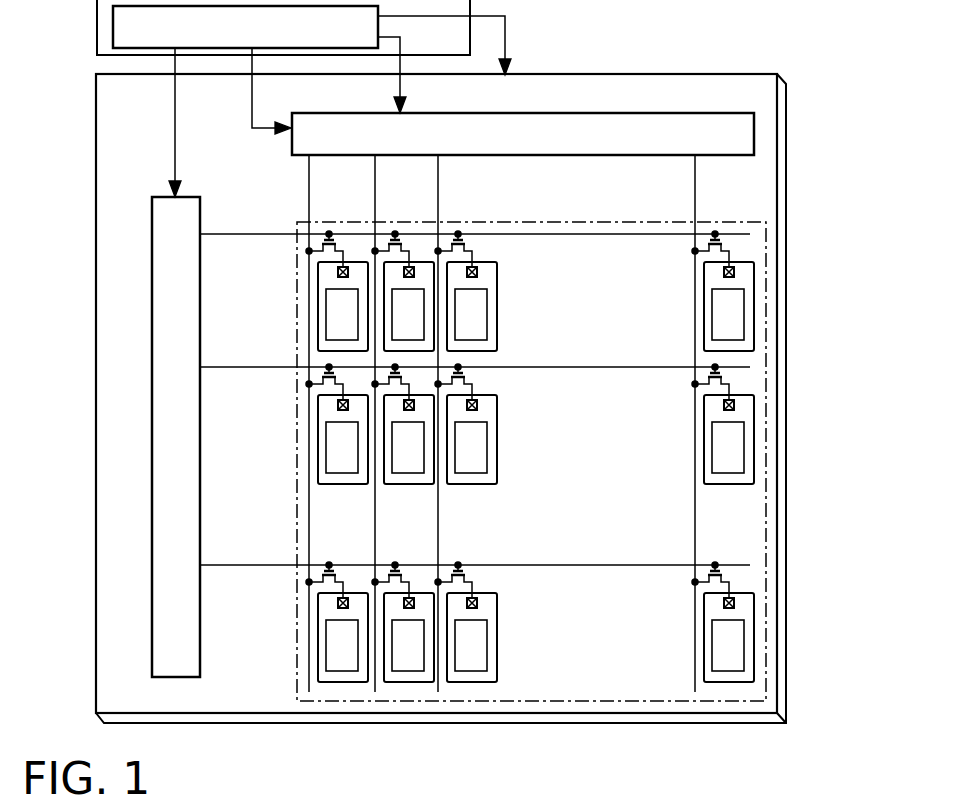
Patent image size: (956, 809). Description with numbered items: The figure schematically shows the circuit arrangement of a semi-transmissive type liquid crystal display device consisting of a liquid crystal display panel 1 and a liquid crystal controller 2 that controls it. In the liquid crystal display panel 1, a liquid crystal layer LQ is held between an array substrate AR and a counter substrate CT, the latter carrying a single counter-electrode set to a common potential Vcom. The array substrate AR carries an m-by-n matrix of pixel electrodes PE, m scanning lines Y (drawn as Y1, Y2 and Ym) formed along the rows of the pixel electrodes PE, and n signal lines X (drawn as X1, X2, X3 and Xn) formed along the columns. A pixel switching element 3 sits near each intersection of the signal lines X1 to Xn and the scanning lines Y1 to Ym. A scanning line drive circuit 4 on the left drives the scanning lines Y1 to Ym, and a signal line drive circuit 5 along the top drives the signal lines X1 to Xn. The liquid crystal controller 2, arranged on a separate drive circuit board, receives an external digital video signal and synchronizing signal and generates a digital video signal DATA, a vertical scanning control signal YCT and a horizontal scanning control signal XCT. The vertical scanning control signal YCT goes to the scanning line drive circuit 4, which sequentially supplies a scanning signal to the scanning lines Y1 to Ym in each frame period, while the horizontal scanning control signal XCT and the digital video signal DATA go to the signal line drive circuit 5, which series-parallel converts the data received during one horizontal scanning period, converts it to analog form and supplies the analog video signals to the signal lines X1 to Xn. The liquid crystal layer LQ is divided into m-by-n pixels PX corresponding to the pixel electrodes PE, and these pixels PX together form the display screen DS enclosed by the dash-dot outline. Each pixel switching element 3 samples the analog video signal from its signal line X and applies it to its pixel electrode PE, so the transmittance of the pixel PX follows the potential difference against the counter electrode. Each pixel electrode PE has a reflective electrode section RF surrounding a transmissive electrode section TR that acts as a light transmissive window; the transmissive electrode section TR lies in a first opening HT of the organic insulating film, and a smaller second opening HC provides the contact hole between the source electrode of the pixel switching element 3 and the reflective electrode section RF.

The liquid crystal display panel 1 is at (639, 67).
The liquid crystal controller 2 is at (113, 30).
The pixel switching element 3 is at (468, 242).
The scanning line drive circuit 4 is at (160, 234).
The signal line drive circuit 5 is at (728, 113).
The vertical scanning control signal YCT is at (175, 112).
The horizontal scanning control signal XCT is at (252, 93).
The digital video signal DATA is at (442, 93).
The common potential Vcom is at (543, 34).
The display screen DS is at (622, 223).
The pixel PX is at (347, 227).
The scanning line Y1 is at (475, 223).
The scanning line Y2 is at (475, 356).
The scanning line Ym is at (475, 553).
The signal line X1 is at (329, 423).
The signal line X2 is at (394, 423).
The signal line X3 is at (457, 423).
The signal line Xn is at (715, 423).
The scanning lines Y is at (273, 227).
The signal lines X is at (704, 195).
The second opening HC is at (479, 271).
The reflective electrode section RF is at (488, 284).
The transmissive electrode section TR is at (473, 313).
The first opening HT is at (488, 336).
The pixel electrode PE is at (563, 268).
The array substrate AR is at (778, 240).
The liquid crystal layer LQ is at (788, 277).
The counter substrate CT is at (788, 312).